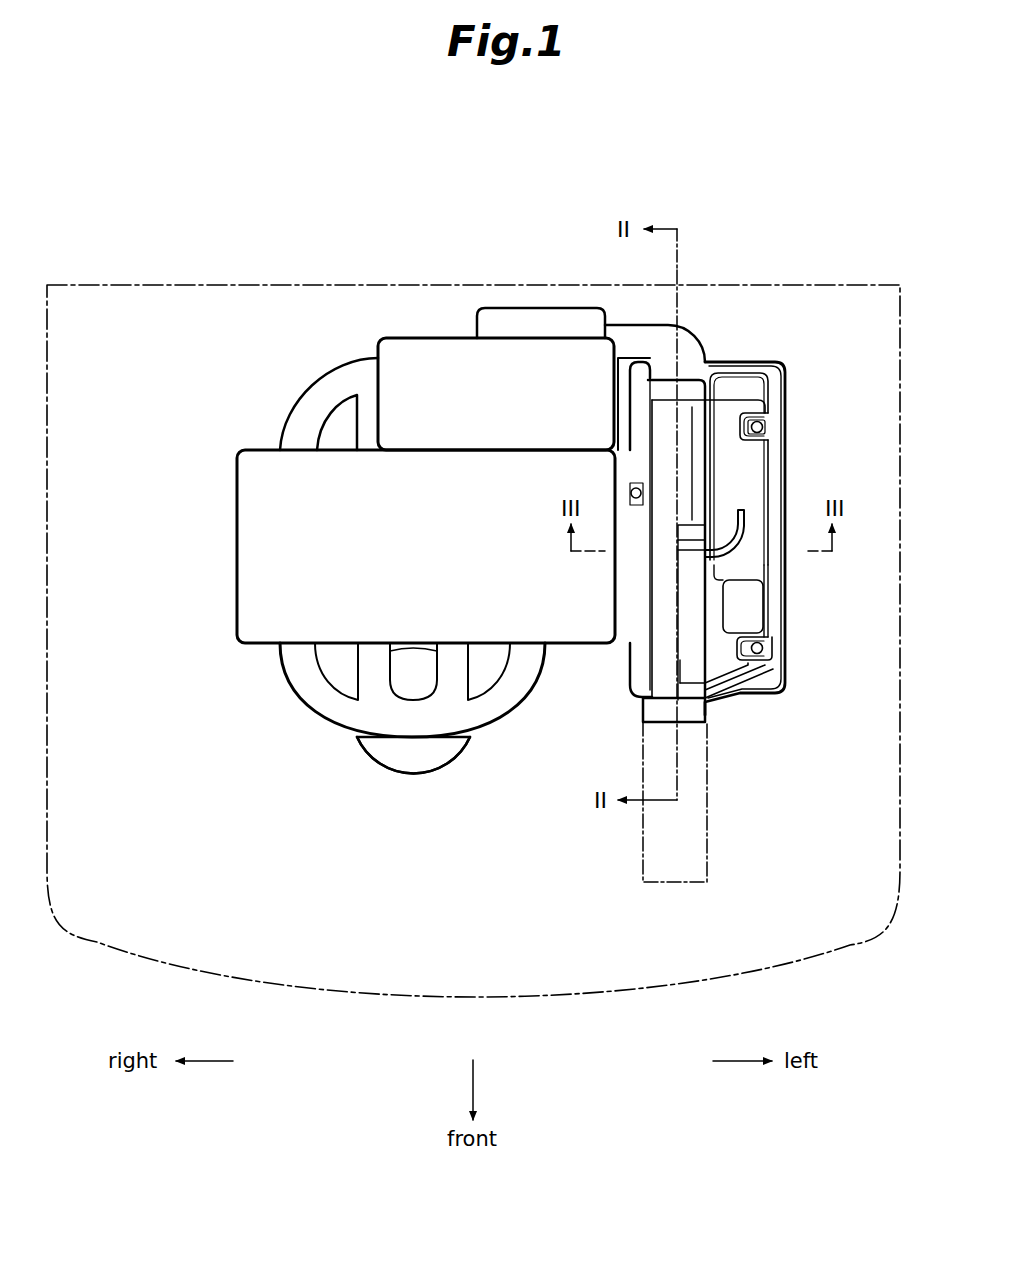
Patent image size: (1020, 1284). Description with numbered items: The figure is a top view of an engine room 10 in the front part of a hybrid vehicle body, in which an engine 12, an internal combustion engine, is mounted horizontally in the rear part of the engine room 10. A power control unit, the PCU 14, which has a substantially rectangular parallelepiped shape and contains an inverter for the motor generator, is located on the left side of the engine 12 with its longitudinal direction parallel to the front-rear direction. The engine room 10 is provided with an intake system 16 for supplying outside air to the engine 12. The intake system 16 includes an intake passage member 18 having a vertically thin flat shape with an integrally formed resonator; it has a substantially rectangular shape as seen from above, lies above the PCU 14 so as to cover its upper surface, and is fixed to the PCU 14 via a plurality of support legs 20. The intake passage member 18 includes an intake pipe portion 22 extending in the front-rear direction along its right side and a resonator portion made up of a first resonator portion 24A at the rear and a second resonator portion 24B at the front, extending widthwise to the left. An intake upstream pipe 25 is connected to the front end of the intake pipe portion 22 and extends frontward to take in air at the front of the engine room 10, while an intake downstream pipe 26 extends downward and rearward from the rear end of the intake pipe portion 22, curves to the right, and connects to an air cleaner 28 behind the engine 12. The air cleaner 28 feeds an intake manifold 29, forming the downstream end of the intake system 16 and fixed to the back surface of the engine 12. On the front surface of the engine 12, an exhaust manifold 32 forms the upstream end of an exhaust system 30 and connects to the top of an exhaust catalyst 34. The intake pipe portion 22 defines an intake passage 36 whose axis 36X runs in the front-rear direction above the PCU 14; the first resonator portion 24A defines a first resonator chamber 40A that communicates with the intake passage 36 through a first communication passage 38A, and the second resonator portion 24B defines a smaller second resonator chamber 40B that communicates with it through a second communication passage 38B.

The engine room 10 is at (278, 285).
The engine 12 is at (237, 553).
The PCU 14 is at (787, 388).
The intake system 16 is at (730, 340).
The intake passage member 18 is at (775, 612).
The support legs 20 is at (768, 424).
The intake pipe portion 22 is at (660, 675).
The first resonator portion 24A is at (757, 481).
The second resonator portion 24B is at (760, 593).
The intake upstream pipe 25 is at (707, 811).
The intake downstream pipe 26 is at (673, 335).
The air cleaner 28 is at (548, 318).
The intake manifold 29 is at (312, 385).
The exhaust system 30 is at (258, 665).
The exhaust manifold 32 is at (312, 705).
The exhaust catalyst 34 is at (421, 766).
The intake passage 36 is at (667, 647).
The axis of the intake passage 36X is at (673, 735).
The first communication passage 38A is at (688, 540).
The second communication passage 38B is at (708, 700).
The first resonator chamber 40A is at (760, 460).
The second resonator chamber 40B is at (755, 620).